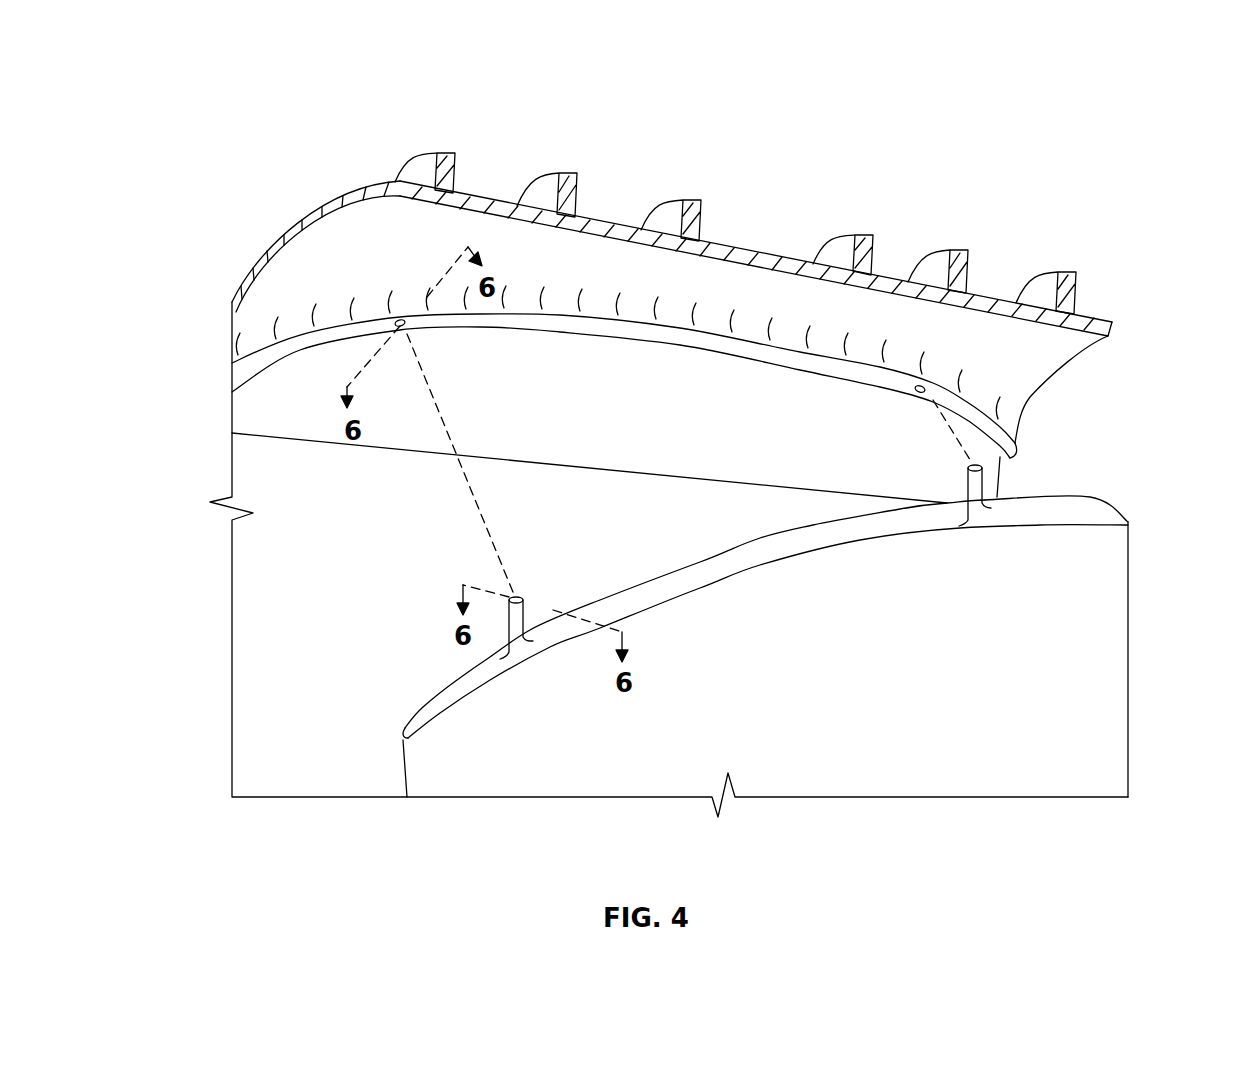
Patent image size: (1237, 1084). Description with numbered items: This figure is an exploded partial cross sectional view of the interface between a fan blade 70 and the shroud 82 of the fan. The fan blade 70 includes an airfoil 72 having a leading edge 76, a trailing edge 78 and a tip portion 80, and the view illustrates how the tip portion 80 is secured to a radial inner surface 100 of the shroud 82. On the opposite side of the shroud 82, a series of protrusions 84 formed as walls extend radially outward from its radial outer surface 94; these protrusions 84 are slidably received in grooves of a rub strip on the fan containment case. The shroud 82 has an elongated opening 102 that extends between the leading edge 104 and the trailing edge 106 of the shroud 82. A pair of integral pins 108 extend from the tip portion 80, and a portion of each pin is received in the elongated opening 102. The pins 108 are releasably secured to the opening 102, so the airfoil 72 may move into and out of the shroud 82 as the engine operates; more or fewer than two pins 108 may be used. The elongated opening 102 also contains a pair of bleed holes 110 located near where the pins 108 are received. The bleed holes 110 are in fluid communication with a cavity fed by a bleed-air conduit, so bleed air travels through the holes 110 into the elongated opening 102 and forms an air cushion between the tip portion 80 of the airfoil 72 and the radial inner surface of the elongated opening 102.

The fan blade 70 is at (500, 747).
The airfoil 72 is at (1010, 747).
The leading edge 76 is at (403, 773).
The trailing edge 78 is at (1128, 607).
The tip portion 80 is at (1077, 512).
The shroud 82 is at (760, 250).
The protrusions 84 is at (693, 197).
The radial outer surface 94 is at (733, 247).
The radial inner surface 100 is at (397, 237).
The elongated opening 102 is at (800, 360).
The leading edge 104 is at (290, 230).
The trailing edge 106 is at (1080, 357).
The integral pins 108 is at (997, 498).
The bleed holes 110 is at (400, 319).